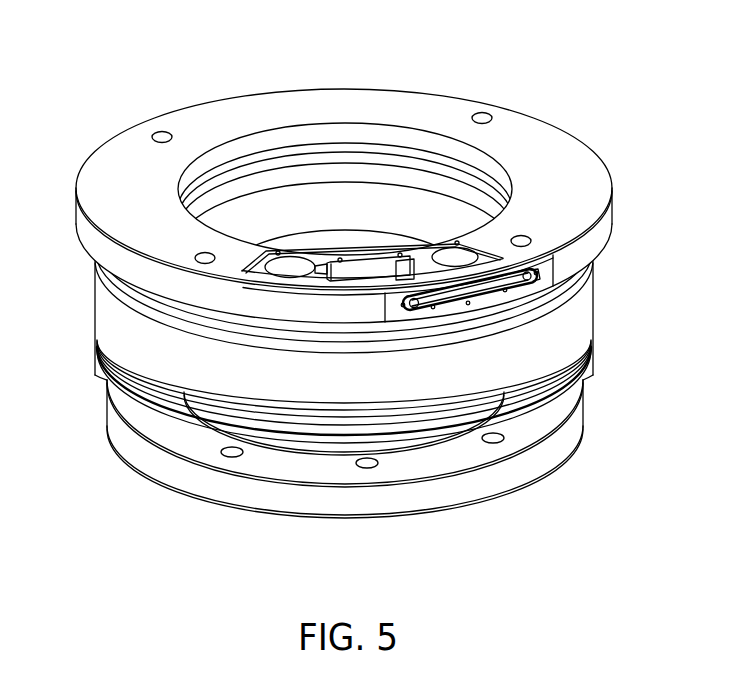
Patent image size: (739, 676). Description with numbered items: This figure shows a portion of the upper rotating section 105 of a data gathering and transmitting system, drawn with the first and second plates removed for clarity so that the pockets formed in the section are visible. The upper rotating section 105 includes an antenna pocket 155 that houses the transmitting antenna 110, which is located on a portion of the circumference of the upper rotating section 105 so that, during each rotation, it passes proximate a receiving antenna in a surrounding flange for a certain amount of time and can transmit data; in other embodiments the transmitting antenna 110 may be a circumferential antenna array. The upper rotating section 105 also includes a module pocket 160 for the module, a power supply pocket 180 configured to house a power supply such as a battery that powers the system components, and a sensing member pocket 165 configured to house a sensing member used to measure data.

The upper rotating section 105 is at (577, 324).
The transmitting antenna 110 is at (493, 292).
The antenna pocket 155 is at (523, 278).
The module pocket 160 is at (367, 270).
The sensing member pocket 165 is at (463, 253).
The power supply pocket 180 is at (291, 267).